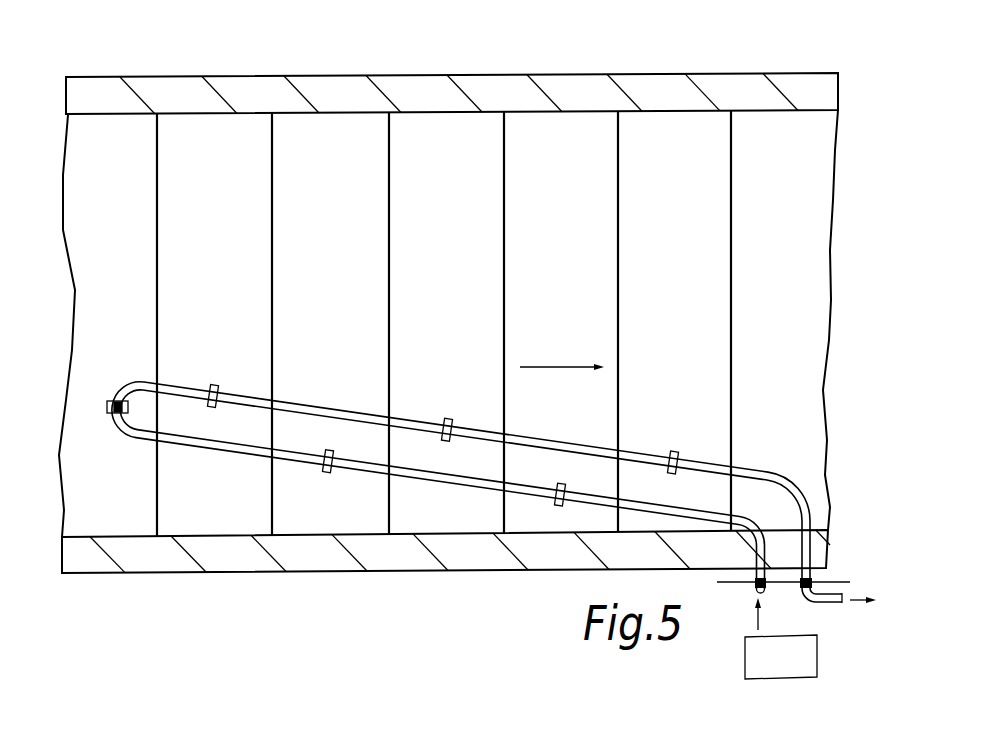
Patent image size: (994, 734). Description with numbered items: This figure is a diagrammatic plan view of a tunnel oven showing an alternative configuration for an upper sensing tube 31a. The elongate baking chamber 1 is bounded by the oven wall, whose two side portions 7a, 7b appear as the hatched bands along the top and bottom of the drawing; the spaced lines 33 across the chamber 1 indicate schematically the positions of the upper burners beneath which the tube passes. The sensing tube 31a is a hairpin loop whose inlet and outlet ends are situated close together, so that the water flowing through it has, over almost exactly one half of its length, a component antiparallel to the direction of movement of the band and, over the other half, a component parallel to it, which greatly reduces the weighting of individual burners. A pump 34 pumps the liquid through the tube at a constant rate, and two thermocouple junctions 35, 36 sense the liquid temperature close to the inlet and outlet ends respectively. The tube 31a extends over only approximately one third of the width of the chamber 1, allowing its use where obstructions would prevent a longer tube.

The baking chamber 1 is at (573, 252).
The side portion of the oven wall 7a is at (315, 586).
The side portion of the oven wall 7b is at (425, 61).
The upper sensing tube 31a is at (230, 450).
The lines indicating positions of upper burners 33 is at (731, 231).
The pump 34 is at (760, 658).
The thermocouple junction 35 is at (736, 586).
The thermocouple junction 36 is at (832, 584).